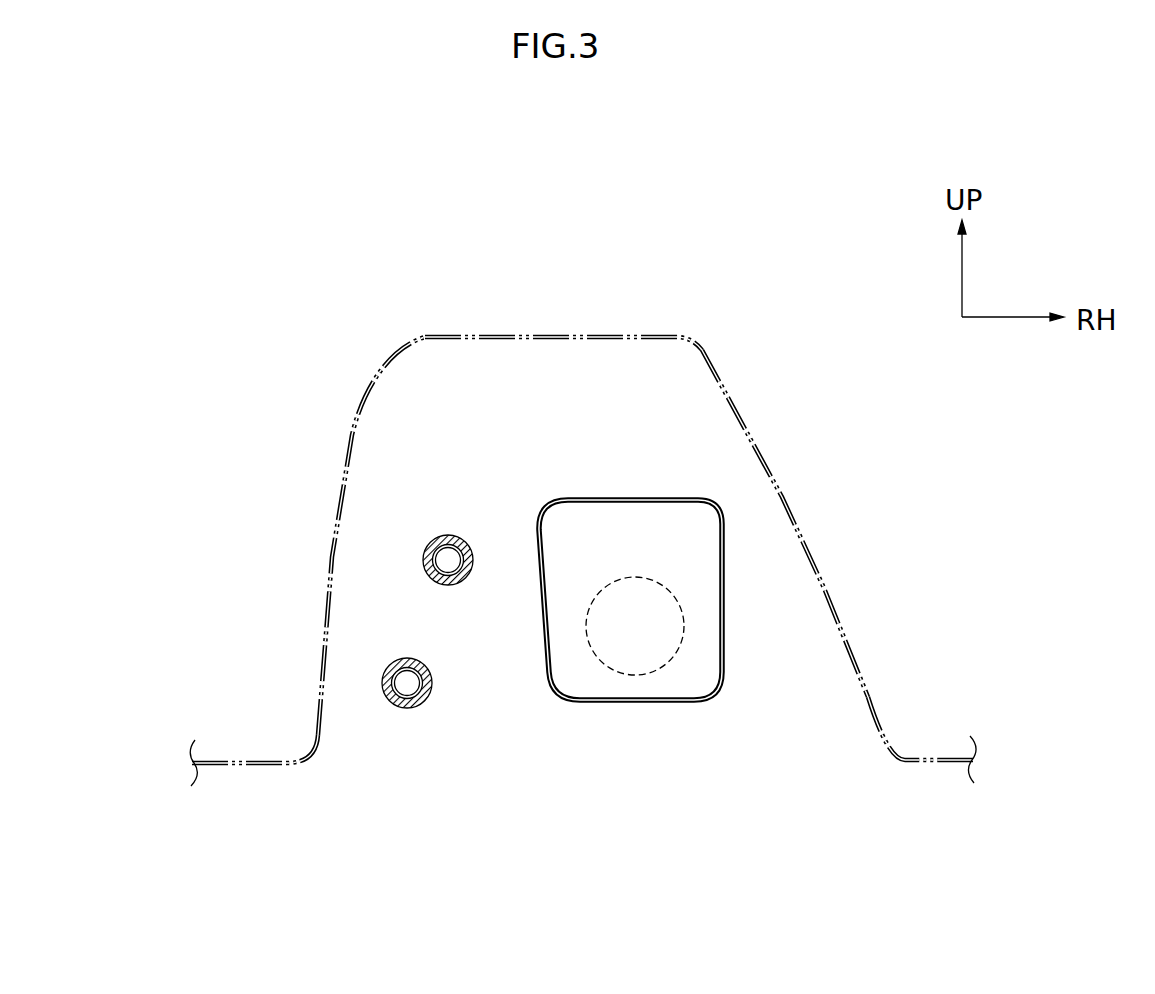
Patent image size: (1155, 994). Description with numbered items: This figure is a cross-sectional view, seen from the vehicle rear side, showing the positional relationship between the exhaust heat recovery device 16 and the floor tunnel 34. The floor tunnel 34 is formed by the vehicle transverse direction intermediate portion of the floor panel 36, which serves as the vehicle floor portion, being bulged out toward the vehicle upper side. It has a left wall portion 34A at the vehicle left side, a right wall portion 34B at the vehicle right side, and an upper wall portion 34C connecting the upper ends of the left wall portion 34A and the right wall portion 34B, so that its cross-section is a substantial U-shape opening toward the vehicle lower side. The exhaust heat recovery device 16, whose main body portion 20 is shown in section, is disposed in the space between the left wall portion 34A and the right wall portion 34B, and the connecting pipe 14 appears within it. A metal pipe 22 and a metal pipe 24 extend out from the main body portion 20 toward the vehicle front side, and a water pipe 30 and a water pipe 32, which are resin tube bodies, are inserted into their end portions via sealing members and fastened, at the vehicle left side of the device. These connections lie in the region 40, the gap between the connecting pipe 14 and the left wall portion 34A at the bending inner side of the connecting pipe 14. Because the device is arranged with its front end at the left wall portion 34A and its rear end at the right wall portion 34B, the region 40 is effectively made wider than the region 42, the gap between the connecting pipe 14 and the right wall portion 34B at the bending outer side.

The connecting pipe 14 is at (651, 670).
The exhaust heat recovery device 16 is at (607, 498).
The main body portion 20 is at (630, 540).
The metal pipe 22 is at (430, 697).
The metal pipe 24 is at (467, 573).
The water pipe 30 is at (463, 740).
The water pipe 32 is at (474, 558).
The floor tunnel 34 is at (592, 508).
The left wall portion 34A is at (338, 477).
The right wall portion 34B is at (826, 582).
The upper wall portion 34C is at (537, 337).
The floor panel 36 is at (943, 758).
The region 40 is at (398, 605).
The region 42 is at (806, 637).